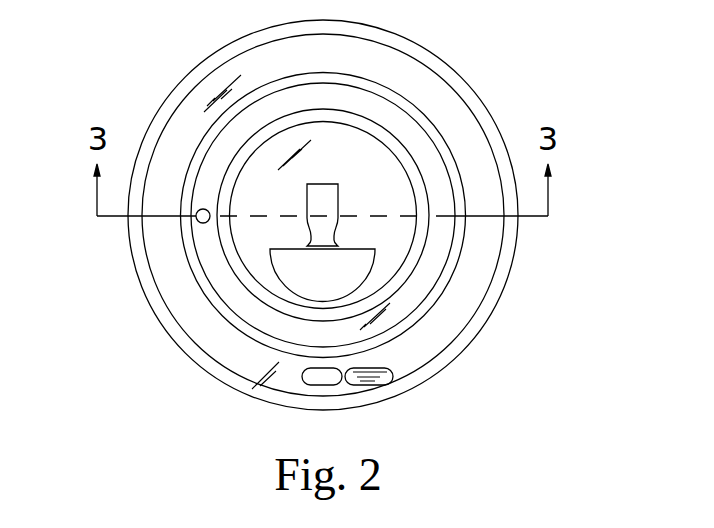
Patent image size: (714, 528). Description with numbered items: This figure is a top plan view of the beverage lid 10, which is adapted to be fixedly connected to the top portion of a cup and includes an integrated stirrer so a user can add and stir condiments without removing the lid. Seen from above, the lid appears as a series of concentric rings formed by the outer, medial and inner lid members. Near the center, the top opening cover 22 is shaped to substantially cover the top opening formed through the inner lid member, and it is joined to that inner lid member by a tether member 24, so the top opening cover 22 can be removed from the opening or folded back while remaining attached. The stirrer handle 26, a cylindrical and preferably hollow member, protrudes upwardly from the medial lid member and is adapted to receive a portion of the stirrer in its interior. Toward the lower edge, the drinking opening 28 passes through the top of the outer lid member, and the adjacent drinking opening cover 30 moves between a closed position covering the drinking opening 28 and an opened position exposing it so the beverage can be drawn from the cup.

The beverage lid 10 is at (547, 83).
The top opening cover 22 is at (284, 263).
The tether member 24 is at (337, 198).
The stirrer handle 26 is at (204, 209).
The drinking opening 28 is at (325, 380).
The drinking opening cover 30 is at (395, 369).